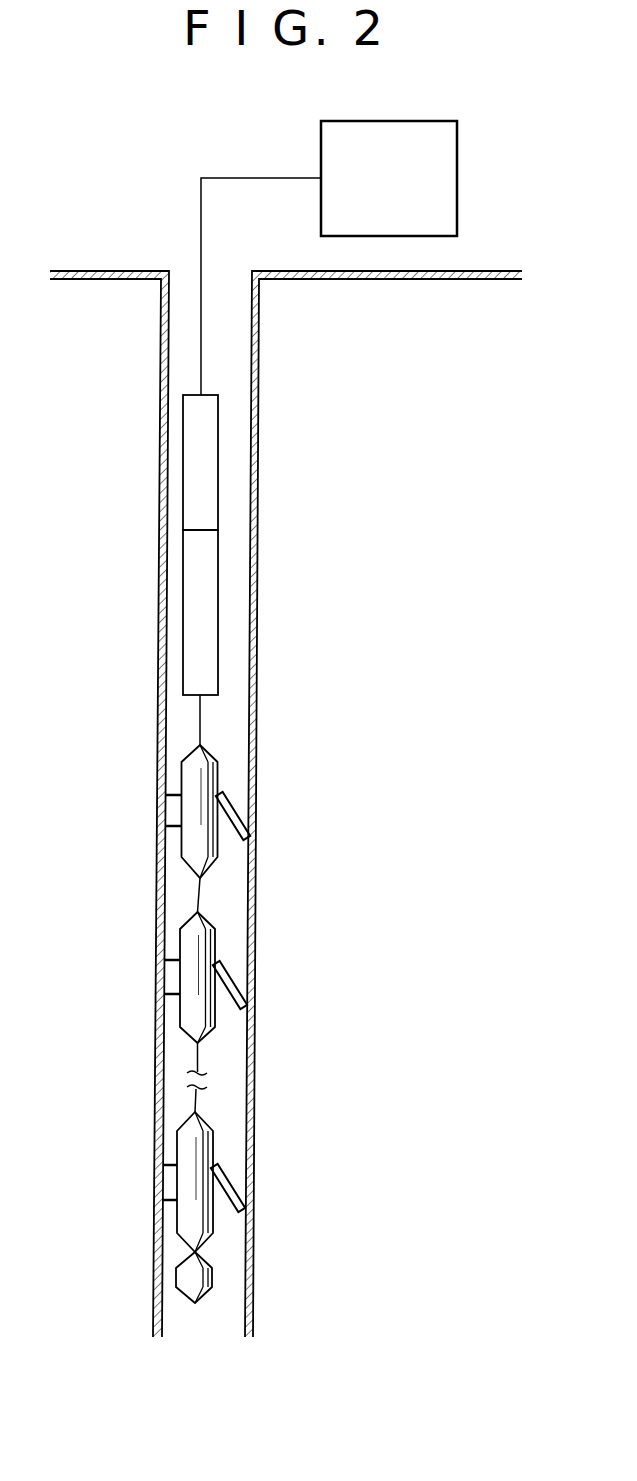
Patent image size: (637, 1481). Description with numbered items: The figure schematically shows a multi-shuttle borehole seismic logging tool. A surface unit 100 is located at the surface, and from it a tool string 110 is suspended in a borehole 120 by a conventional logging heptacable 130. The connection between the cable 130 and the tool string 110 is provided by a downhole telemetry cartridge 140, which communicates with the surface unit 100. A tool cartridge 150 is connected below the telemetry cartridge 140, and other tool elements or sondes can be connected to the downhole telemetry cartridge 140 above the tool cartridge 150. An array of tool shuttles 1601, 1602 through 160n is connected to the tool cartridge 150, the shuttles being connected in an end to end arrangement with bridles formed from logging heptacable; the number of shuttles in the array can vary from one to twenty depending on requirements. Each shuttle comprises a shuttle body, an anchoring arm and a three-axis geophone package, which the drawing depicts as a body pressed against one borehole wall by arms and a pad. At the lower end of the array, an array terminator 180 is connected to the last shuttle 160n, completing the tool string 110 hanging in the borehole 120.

The surface unit 100 is at (389, 178).
The tool string 110 is at (262, 849).
The borehole 120 is at (257, 347).
The logging heptacable 130 is at (203, 206).
The downhole telemetry cartridge 140 is at (221, 459).
The tool cartridge 150 is at (221, 598).
The tool shuttle 1601 is at (217, 778).
The tool shuttle 1602 is at (215, 944).
The tool shuttle 160n is at (213, 1143).
The array terminator 180 is at (212, 1278).